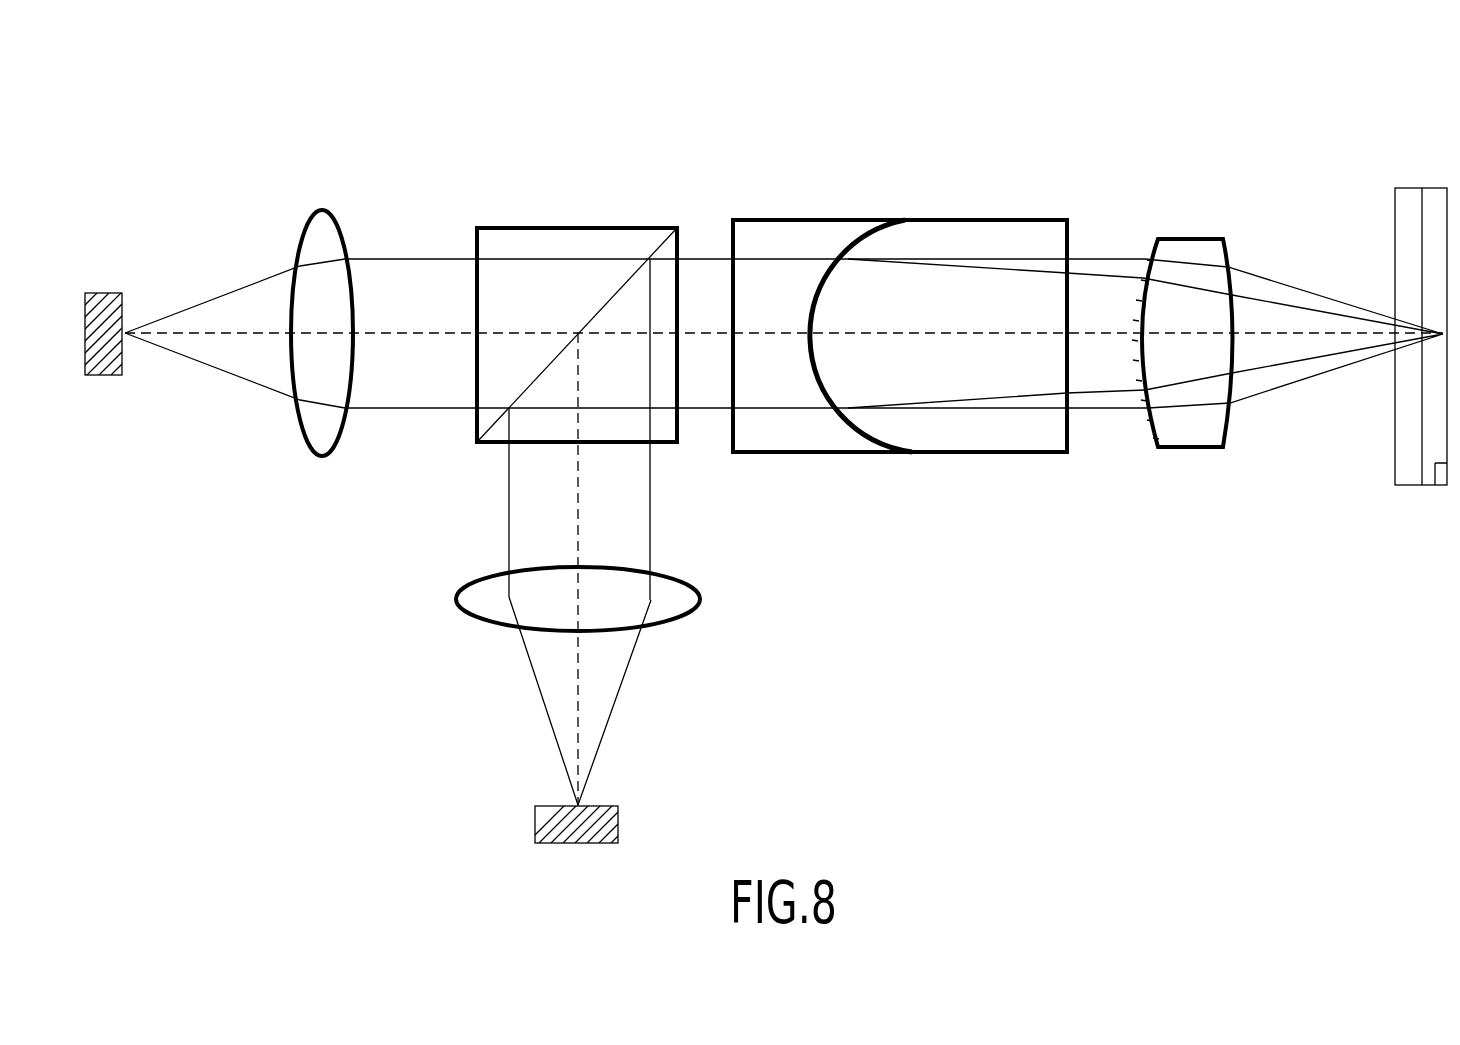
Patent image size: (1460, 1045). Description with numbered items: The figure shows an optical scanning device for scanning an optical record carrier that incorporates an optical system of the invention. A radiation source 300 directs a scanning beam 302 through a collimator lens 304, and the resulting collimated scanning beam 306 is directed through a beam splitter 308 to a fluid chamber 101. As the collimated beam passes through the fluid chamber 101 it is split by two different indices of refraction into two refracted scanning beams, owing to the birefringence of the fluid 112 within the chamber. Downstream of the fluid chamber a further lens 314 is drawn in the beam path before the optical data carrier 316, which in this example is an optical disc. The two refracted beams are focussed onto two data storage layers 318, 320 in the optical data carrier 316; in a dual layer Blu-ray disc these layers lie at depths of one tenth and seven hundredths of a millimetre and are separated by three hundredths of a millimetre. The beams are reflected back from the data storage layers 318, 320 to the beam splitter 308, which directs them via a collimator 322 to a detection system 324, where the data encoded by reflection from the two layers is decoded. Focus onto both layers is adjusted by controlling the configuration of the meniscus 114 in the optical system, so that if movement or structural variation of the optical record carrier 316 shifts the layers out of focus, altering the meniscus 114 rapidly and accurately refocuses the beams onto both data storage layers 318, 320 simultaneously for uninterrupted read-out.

The radiation source 300 is at (98, 290).
The scanning beam 302 is at (222, 290).
The collimator lens 304 is at (317, 227).
The collimated scanning beam 306 is at (390, 262).
The beam splitter 308 is at (530, 228).
The fluid chamber 101 is at (907, 220).
The fluid 112 is at (935, 388).
The meniscus 114 is at (860, 427).
The focusing lens 314 is at (1190, 235).
The optical data carrier 316 is at (1390, 137).
The data storage layer 318 is at (1418, 420).
The data storage layer 320 is at (1435, 465).
The collimator 322 is at (478, 600).
The detection system 324 is at (542, 823).